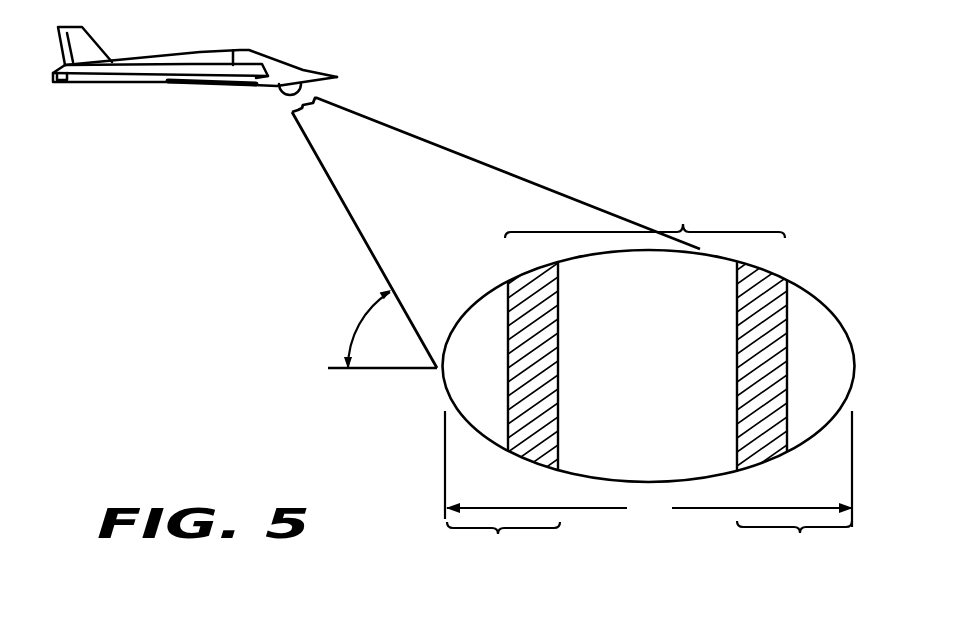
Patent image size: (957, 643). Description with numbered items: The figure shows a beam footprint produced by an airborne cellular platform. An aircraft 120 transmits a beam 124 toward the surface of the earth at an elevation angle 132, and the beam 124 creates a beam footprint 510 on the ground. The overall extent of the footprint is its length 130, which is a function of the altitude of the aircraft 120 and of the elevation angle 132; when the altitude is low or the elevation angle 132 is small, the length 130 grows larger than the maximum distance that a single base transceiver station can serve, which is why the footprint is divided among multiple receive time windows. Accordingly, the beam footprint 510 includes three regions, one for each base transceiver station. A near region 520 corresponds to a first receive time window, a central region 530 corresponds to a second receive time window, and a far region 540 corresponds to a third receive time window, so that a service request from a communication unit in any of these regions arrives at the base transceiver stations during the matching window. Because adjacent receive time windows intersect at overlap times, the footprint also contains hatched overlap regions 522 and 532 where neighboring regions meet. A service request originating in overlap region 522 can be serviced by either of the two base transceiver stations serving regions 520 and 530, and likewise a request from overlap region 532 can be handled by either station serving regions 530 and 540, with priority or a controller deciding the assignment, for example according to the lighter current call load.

The aircraft 120 is at (207, 87).
The beam 124 is at (418, 198).
The elevation angle 132 is at (358, 320).
The beam footprint 510 is at (770, 206).
The region 530 is at (645, 216).
The overlap region 522 is at (558, 363).
The overlap region 532 is at (738, 362).
The length 130 is at (649, 469).
The region 520 is at (503, 544).
The region 540 is at (794, 542).